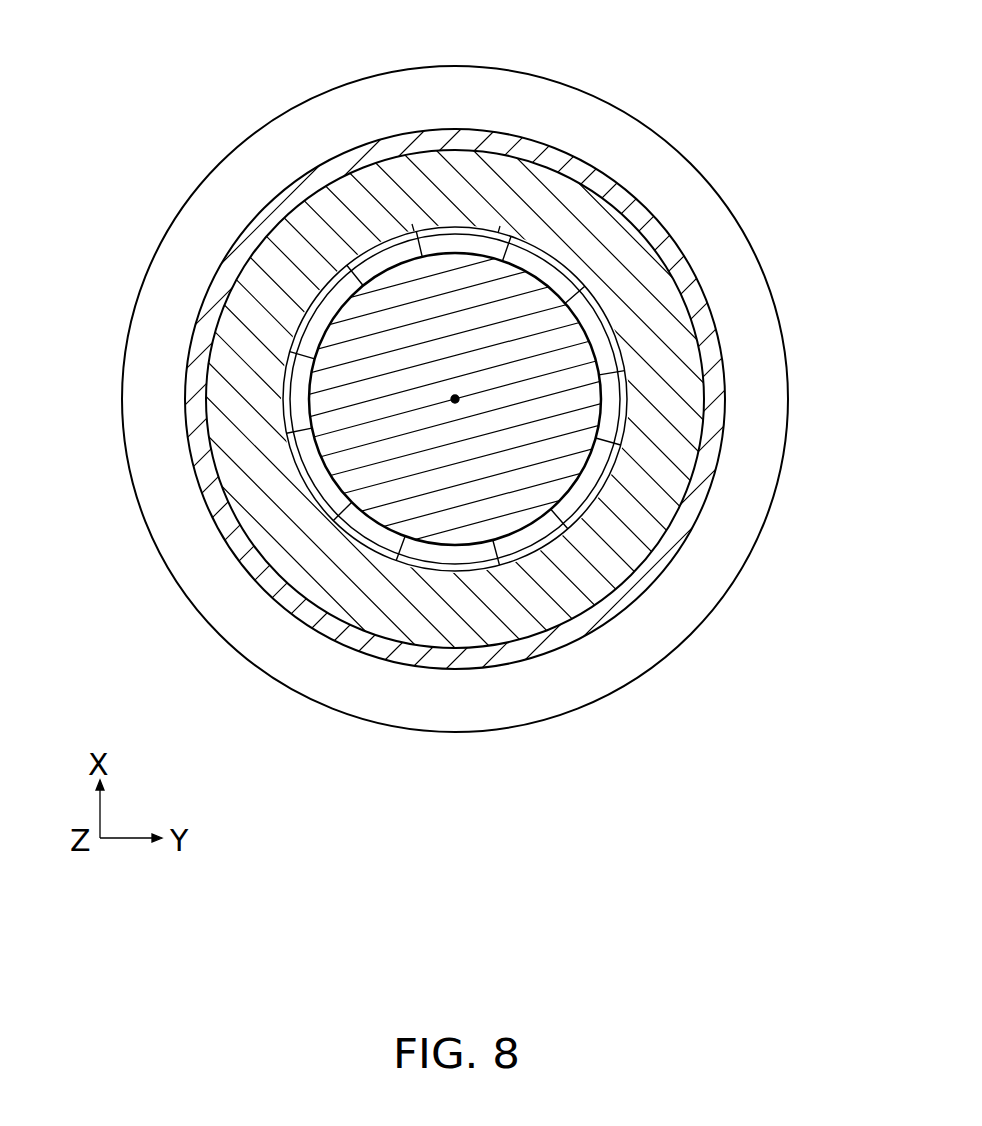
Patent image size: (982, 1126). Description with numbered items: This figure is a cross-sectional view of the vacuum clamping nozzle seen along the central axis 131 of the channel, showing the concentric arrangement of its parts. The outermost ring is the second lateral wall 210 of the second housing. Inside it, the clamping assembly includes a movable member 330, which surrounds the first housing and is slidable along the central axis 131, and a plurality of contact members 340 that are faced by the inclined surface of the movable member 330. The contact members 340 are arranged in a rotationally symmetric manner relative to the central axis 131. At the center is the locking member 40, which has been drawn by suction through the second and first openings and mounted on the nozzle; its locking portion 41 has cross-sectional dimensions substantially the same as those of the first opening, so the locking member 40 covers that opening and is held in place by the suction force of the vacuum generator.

The second lateral wall 210 is at (740, 272).
The movable member 330 is at (664, 272).
The contact member 340 is at (525, 250).
The locking member 40 is at (313, 445).
The locking portion 41 is at (348, 352).
The central axis 131 is at (460, 398).